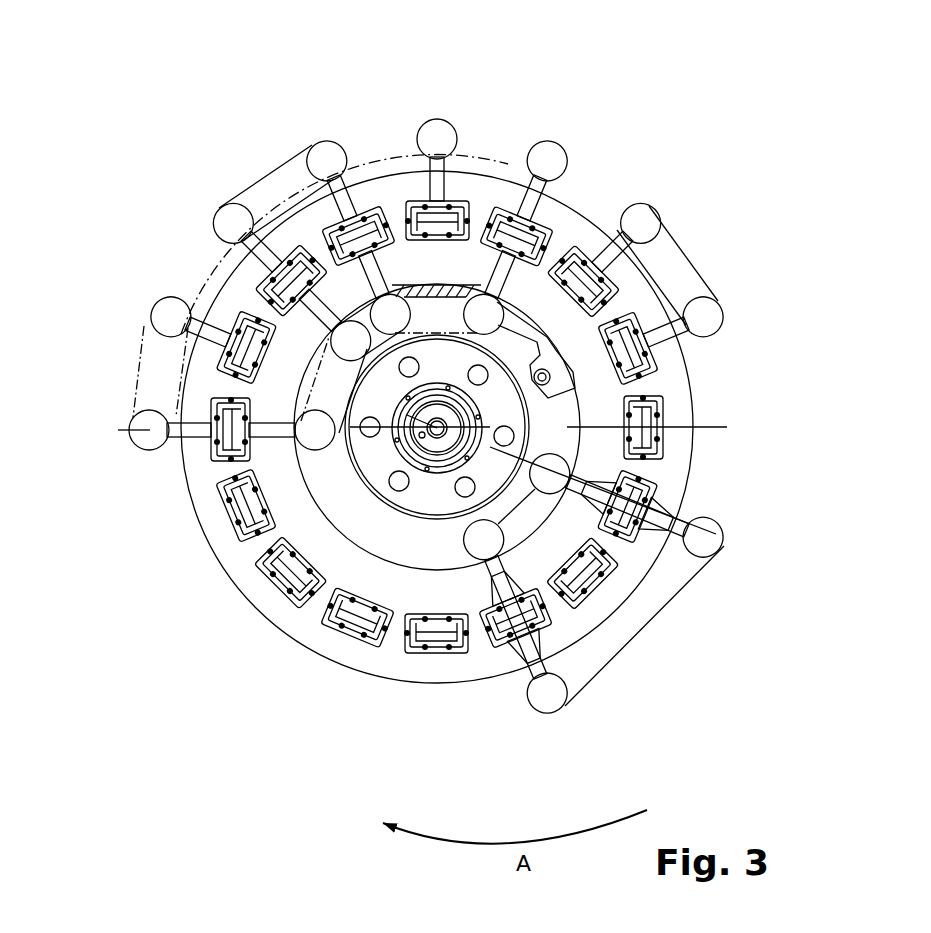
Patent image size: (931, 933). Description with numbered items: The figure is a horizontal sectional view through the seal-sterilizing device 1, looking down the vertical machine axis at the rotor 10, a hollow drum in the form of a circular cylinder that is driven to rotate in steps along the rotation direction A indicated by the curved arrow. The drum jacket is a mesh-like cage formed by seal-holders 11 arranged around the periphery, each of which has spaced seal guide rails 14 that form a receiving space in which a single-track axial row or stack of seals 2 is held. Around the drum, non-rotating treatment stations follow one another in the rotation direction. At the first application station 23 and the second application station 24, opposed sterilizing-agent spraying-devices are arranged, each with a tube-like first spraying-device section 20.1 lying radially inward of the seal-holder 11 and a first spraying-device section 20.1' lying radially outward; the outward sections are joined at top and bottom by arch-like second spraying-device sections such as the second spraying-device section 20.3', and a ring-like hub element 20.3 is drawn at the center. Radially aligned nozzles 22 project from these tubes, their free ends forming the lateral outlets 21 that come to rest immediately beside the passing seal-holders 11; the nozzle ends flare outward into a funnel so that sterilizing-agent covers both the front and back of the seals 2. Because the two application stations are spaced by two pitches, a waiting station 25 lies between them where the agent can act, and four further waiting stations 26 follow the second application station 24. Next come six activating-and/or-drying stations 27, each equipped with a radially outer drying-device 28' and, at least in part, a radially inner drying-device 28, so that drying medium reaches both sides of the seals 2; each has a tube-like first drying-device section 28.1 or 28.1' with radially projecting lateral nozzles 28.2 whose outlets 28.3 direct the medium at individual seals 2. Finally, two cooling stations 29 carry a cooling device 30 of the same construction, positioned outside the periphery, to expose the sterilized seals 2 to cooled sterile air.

The seal-sterilizing device 1 is at (612, 105).
The seals 2 is at (650, 425).
The rotor 10 is at (601, 213).
The seal-holder 11 is at (667, 410).
The seal guide rails 14 is at (655, 453).
The first spraying-device section 20.1 is at (562, 595).
The first spraying-device section 20.1' is at (654, 632).
The hub plate 20.3 is at (437, 443).
The second spraying-device section 20.3' is at (497, 493).
The lateral outlets 21 is at (525, 632).
The nozzles 22 is at (503, 645).
The first application station 23 is at (719, 560).
The second application station 24 is at (564, 700).
The waiting station 25 is at (617, 582).
The further waiting stations 26 is at (407, 655).
The activating-and/or-drying stations 27 is at (410, 106).
The drying-device 28 is at (396, 324).
The drying-device 28' is at (321, 240).
The first drying-device section 28.1 is at (334, 391).
The first drying-device section 28.1' is at (163, 384).
The lateral nozzles 28.2 is at (268, 440).
The outlets 28.3 is at (268, 440).
The cooling stations 29 is at (715, 228).
The cooling device 30 is at (655, 212).